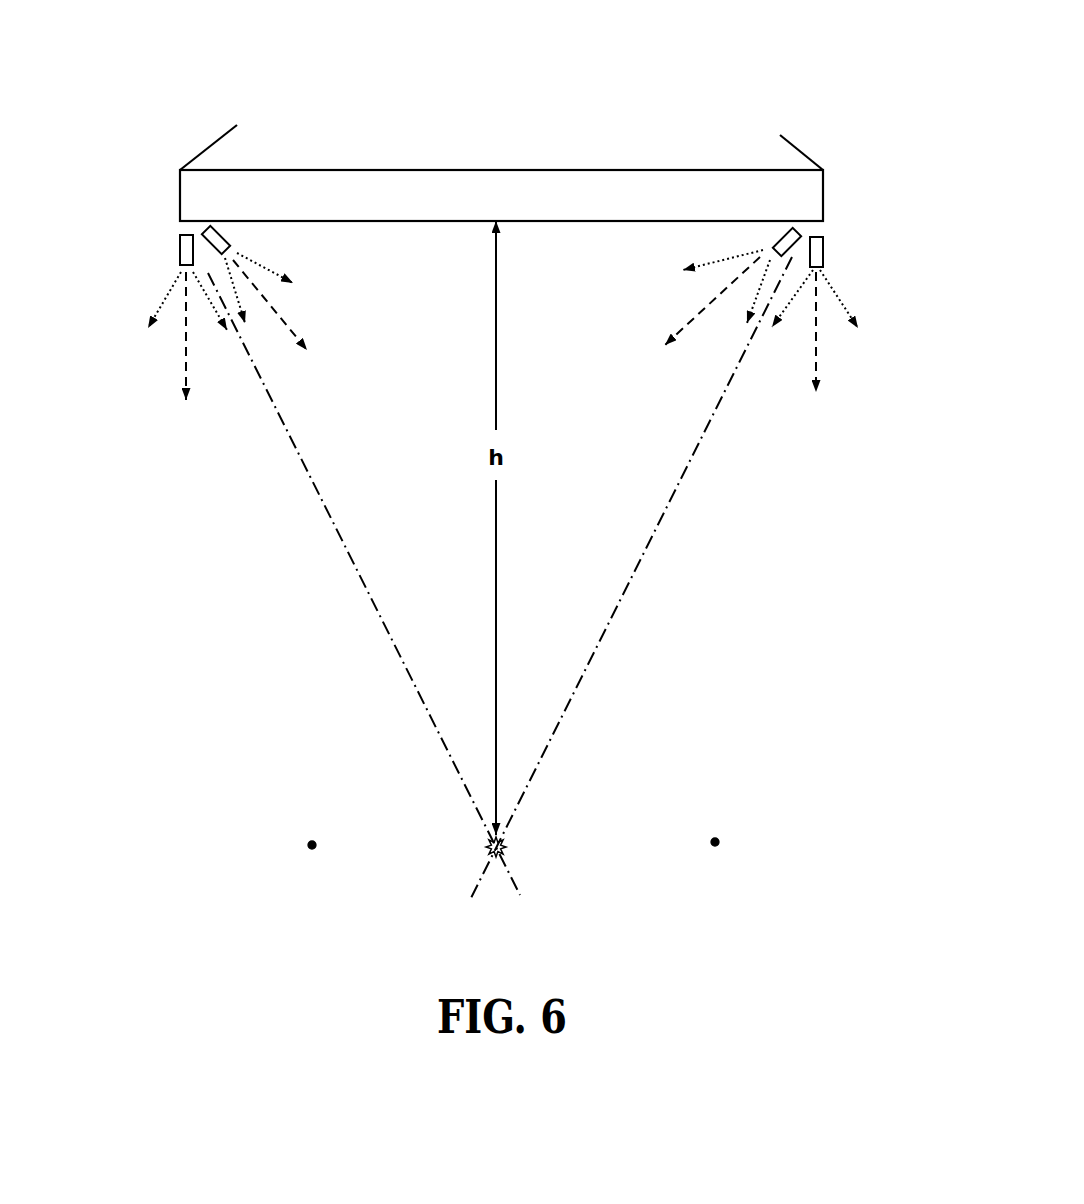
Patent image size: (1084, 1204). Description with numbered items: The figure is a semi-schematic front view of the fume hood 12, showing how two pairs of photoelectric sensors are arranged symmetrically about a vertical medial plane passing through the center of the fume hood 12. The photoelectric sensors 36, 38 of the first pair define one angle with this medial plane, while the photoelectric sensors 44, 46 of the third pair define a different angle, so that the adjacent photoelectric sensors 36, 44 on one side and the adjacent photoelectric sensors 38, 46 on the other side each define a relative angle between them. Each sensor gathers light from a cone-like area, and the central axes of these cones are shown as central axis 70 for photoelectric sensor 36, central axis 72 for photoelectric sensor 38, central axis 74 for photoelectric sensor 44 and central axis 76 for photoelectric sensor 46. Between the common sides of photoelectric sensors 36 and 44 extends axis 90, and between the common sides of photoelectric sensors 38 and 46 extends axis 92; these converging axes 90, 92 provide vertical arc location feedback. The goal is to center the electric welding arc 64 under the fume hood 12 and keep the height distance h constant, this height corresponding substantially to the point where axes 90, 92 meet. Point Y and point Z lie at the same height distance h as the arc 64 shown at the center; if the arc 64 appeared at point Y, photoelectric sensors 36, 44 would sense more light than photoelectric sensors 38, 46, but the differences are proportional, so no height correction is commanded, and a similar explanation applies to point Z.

The fume hood 12 is at (810, 157).
The photoelectric sensor 46 is at (218, 233).
The photoelectric sensor 38 is at (180, 252).
The photoelectric sensor 44 is at (797, 228).
The photoelectric sensor 36 is at (825, 253).
The central axis 76 is at (283, 323).
The central axis 74 is at (713, 298).
The central axis 72 is at (186, 353).
The central axis 70 is at (816, 360).
The axis 92 is at (357, 577).
The axis 90 is at (633, 572).
The electric welding arc 64 is at (508, 850).
The point Z is at (312, 845).
The point Y is at (715, 842).